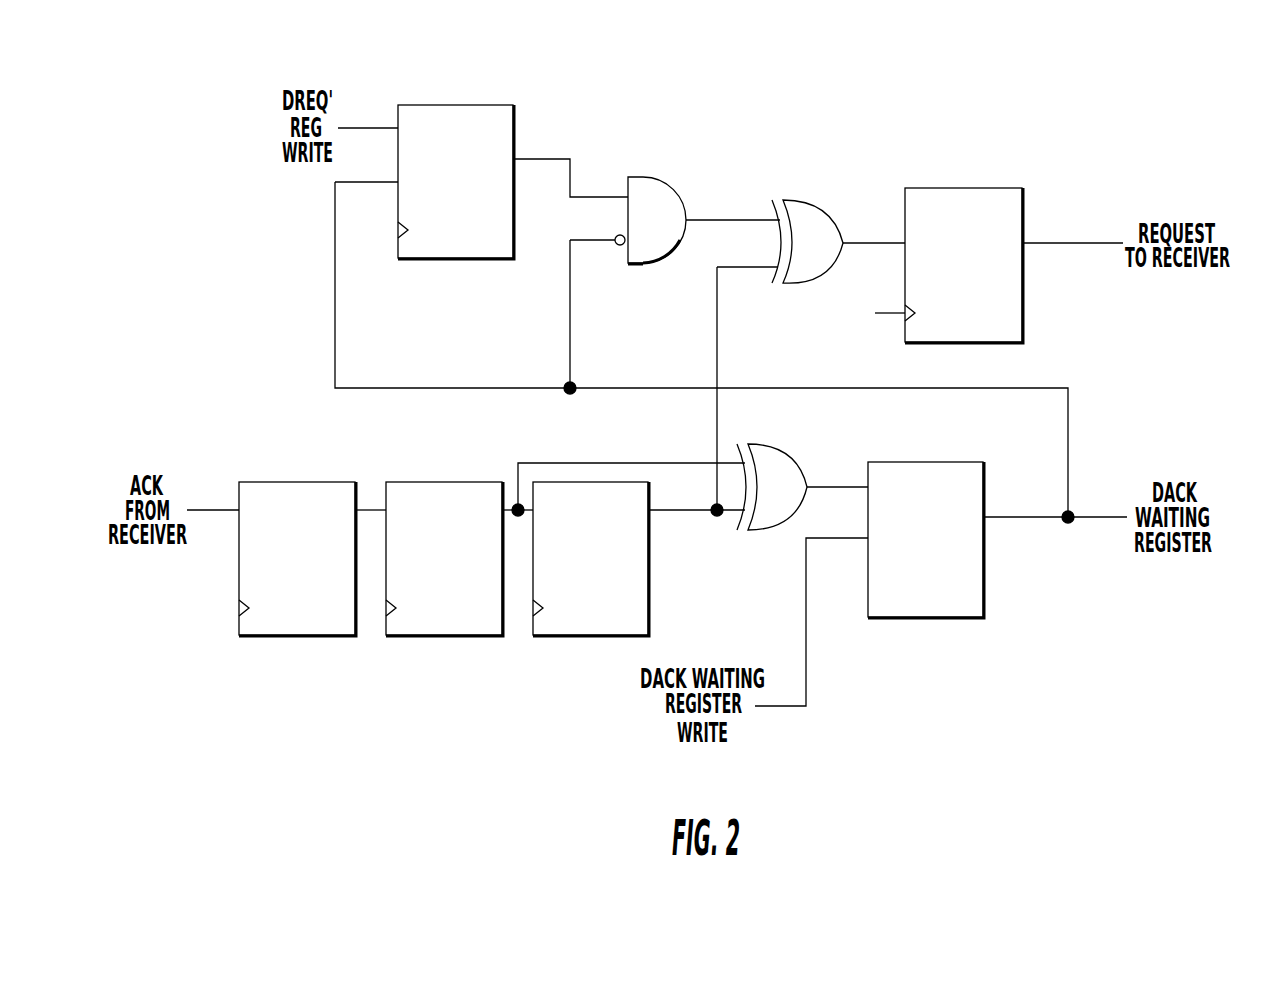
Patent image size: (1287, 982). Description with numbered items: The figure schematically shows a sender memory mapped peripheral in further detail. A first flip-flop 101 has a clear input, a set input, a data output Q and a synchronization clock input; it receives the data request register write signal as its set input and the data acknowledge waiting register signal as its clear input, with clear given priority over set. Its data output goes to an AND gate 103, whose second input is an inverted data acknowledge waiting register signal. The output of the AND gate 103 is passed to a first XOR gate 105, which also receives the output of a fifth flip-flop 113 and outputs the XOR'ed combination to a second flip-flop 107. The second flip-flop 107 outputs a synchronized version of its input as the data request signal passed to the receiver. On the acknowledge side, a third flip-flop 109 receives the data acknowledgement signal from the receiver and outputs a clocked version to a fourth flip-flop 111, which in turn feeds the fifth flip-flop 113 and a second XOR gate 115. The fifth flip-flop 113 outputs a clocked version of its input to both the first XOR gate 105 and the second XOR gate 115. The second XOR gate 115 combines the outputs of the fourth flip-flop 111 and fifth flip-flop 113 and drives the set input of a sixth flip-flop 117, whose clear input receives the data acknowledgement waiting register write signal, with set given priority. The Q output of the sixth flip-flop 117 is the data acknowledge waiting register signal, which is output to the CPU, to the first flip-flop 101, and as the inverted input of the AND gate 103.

The first flip-flop 101 is at (467, 105).
The AND gate 103 is at (643, 177).
The first XOR gate 105 is at (797, 202).
The second flip-flop 107 is at (968, 188).
The third flip-flop 109 is at (310, 636).
The fourth flip-flop 111 is at (450, 636).
The fifth flip-flop 113 is at (602, 636).
The second XOR gate 115 is at (768, 530).
The sixth flip-flop 117 is at (920, 618).